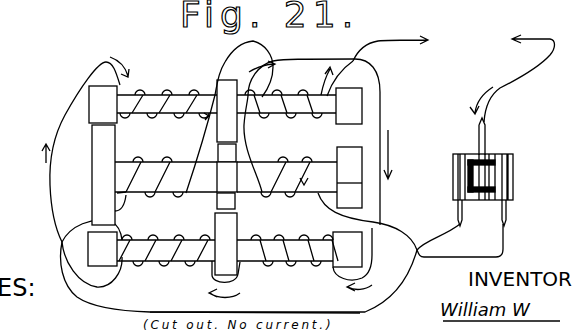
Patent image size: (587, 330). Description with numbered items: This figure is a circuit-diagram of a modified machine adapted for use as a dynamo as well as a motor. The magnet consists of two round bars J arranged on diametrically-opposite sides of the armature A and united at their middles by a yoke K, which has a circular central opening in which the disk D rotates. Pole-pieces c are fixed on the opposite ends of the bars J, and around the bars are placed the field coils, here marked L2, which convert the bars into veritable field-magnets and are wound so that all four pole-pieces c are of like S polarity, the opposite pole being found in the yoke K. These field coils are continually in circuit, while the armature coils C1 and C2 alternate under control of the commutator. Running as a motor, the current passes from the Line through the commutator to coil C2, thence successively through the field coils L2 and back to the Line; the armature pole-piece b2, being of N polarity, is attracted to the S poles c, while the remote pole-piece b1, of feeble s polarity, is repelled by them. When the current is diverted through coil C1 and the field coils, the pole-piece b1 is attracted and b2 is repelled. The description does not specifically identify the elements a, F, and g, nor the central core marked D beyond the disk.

The field coil L2 is at (228, 172).
The round bar J is at (227, 178).
The pole-piece c is at (272, 185).
The south polarity S is at (225, 176).
The north polarity N is at (282, 177).
The feeble south polarity s is at (168, 174).
The armature pole-piece b1 is at (103, 175).
The armature pole-piece b2 is at (349, 177).
The armature coil C1 is at (150, 170).
The armature coil C2 is at (286, 170).
The armature A is at (166, 177).
The armature a is at (287, 177).
The disk D is at (227, 177).
The yoke K is at (231, 270).
The relay F is at (513, 173).
The contact pin g is at (488, 136).
The line Line is at (454, 77).